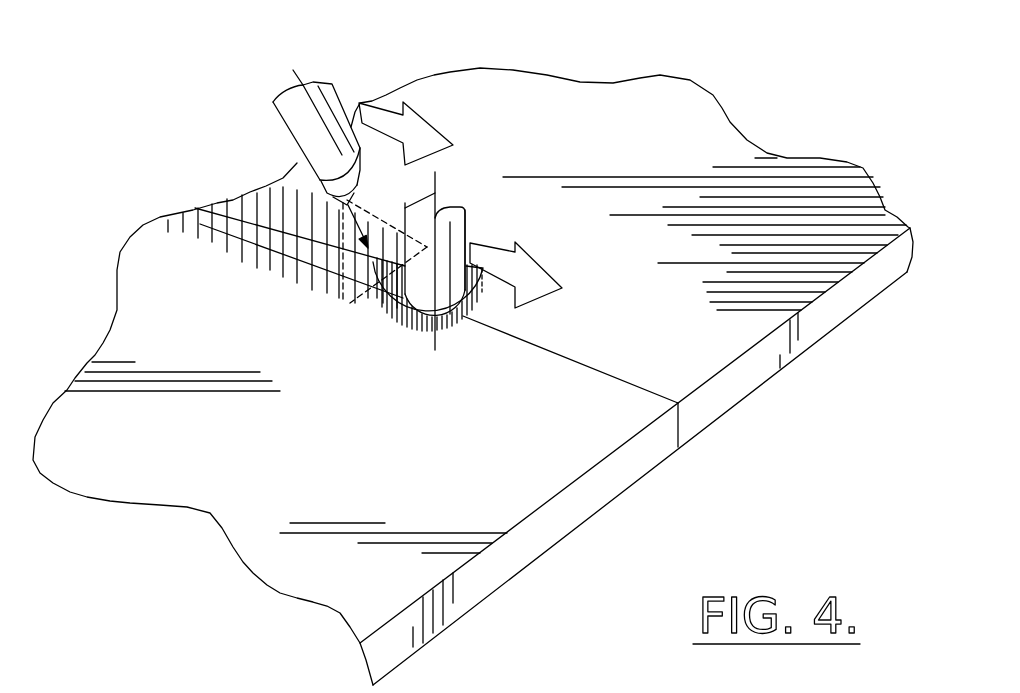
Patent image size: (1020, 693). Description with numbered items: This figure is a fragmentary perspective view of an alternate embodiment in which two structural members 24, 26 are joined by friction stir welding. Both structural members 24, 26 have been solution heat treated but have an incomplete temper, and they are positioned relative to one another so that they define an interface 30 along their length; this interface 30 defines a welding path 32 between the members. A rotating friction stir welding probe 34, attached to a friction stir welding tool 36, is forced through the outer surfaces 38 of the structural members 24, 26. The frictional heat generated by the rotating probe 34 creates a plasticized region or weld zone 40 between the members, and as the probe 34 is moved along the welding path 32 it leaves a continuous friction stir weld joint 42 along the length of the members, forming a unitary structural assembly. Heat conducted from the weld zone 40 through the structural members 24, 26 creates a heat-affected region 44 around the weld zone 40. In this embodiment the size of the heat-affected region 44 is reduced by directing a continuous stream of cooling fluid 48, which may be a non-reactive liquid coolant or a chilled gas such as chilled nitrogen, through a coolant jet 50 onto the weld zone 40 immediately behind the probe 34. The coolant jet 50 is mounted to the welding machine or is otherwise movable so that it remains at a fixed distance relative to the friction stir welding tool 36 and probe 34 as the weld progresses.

The structural member 24 is at (640, 478).
The structural member 26 is at (635, 435).
The interface 30 is at (604, 411).
The welding path 32 is at (552, 283).
The friction stir welding probe 34 is at (442, 320).
The friction stir welding tool 36 is at (506, 188).
The outer surfaces 38 is at (473, 369).
The weld zone 40 is at (400, 307).
The friction stir weld joint 42 is at (282, 247).
The heat-affected region 44 is at (412, 330).
The cooling fluid 48 is at (343, 245).
The coolant jet 50 is at (335, 122).